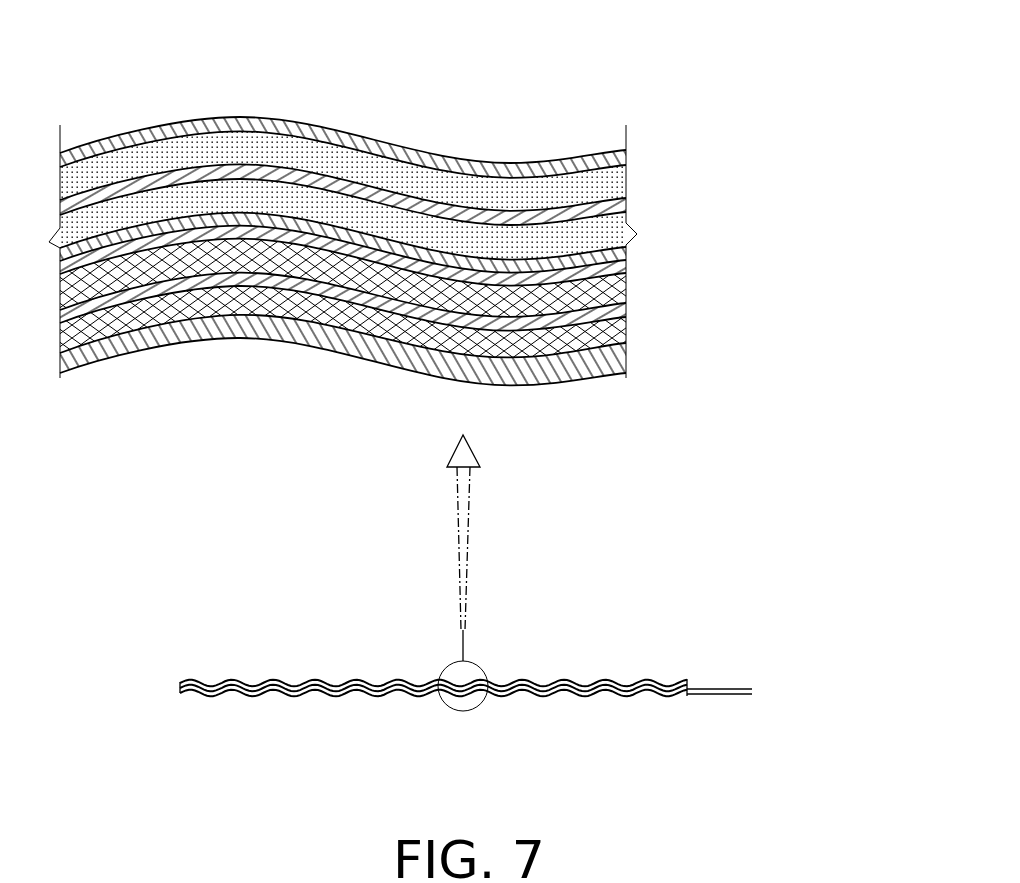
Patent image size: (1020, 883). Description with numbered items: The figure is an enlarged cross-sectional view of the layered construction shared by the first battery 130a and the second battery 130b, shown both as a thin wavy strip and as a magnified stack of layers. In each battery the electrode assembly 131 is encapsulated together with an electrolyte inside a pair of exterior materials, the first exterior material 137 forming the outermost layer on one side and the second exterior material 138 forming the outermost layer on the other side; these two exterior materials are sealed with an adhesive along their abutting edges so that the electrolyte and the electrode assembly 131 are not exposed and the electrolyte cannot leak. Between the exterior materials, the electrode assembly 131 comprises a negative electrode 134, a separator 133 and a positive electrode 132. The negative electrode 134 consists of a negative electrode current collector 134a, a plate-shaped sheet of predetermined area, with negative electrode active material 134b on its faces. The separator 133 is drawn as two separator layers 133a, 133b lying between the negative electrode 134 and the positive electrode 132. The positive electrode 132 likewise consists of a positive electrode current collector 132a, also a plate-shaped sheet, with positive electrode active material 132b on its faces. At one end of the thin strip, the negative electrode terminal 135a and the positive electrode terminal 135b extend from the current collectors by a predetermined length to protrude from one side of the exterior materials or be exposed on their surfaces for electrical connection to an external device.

The first battery 130a is at (462, 400).
The second battery 130b is at (248, 97).
The electrode assembly 131 is at (810, 190).
The positive electrode 132 is at (740, 307).
The positive electrode current collector 132a is at (627, 310).
The positive electrode active material 132b is at (627, 288).
The separator 133 is at (740, 241).
The separator layer 133a is at (627, 251).
The separator layer 133b is at (627, 264).
The negative electrode 134 is at (740, 152).
The negative electrode current collector 134a is at (617, 201).
The negative electrode active material 134b is at (620, 181).
The negative electrode terminal 135a is at (720, 688).
The positive electrode terminal 135b is at (731, 698).
The first exterior material 137 is at (627, 152).
The second exterior material 138 is at (593, 368).